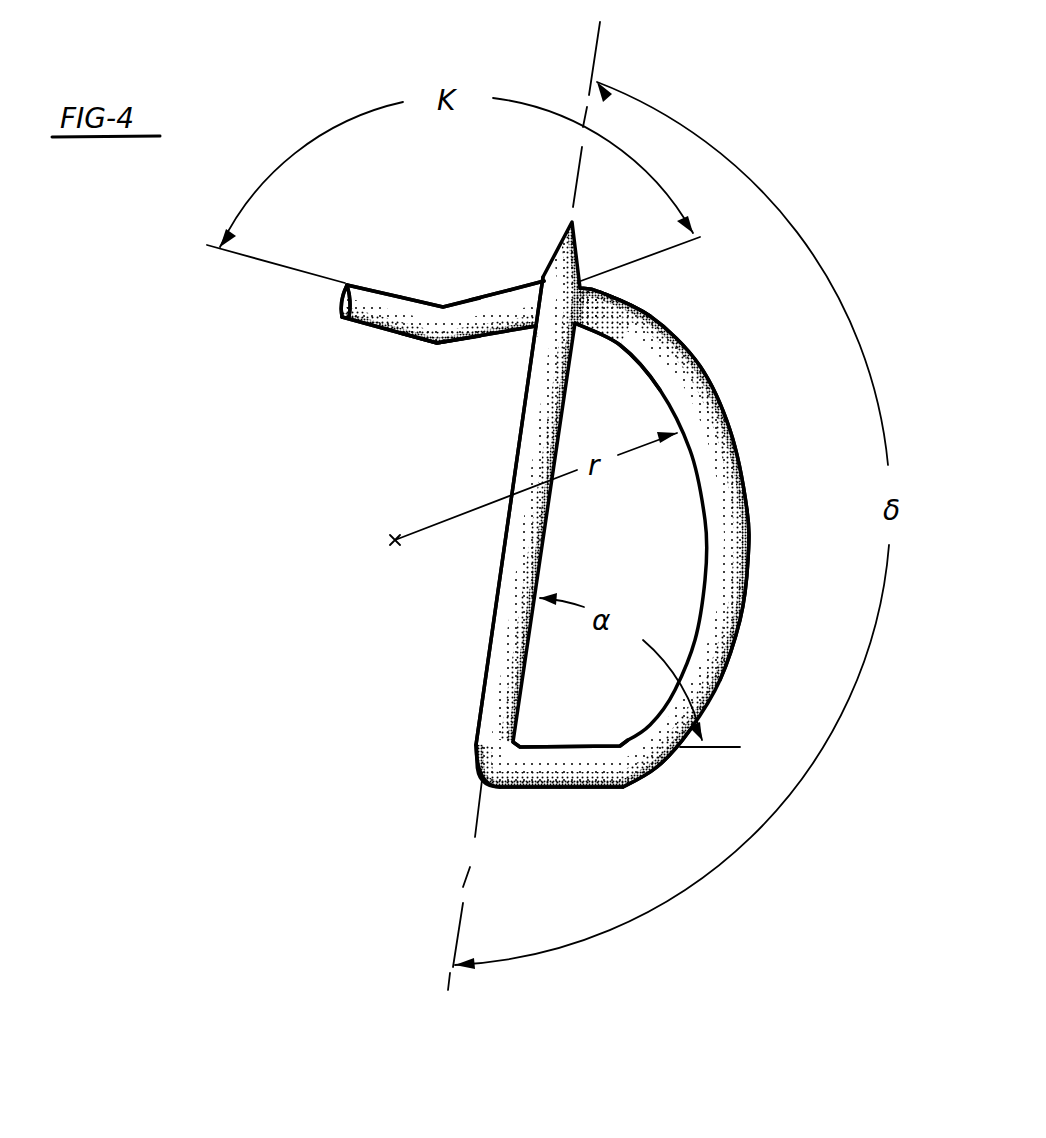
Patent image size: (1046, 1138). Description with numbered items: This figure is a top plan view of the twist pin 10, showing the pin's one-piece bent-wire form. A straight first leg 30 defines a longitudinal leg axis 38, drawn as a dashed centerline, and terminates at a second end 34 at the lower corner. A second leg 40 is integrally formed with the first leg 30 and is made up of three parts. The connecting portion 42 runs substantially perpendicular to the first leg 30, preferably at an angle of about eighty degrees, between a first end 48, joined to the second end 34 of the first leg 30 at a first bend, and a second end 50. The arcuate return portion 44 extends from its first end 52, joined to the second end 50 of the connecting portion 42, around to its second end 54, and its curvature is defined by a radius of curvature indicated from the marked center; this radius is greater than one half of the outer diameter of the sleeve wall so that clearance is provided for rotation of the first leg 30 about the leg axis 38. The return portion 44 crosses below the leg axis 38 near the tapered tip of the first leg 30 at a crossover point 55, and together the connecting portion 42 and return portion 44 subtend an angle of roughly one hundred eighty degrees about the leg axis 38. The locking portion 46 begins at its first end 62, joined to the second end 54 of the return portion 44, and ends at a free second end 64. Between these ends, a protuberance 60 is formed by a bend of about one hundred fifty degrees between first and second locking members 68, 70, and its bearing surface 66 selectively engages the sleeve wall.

The twist pin 10 is at (740, 113).
The first leg 30 is at (490, 608).
The second end of first leg 34 is at (473, 736).
The longitudinal leg axis 38 is at (595, 40).
The second leg 40 is at (690, 368).
The connecting portion 42 is at (553, 757).
The arcuate return portion 44 is at (747, 540).
The locking portion 46 is at (392, 336).
The first end of connecting portion 48 is at (497, 790).
The second end of connecting portion 50 is at (610, 790).
The first end of return portion 52 is at (652, 772).
The second end of return portion 54 is at (578, 326).
The crossover point 55 is at (603, 287).
The protuberance 60 is at (440, 312).
The first end of locking portion 62 is at (542, 282).
The second end of locking portion 64 is at (340, 307).
The bearing surface 66 is at (443, 348).
The first locking member 68 is at (495, 303).
The second locking member 70 is at (372, 283).